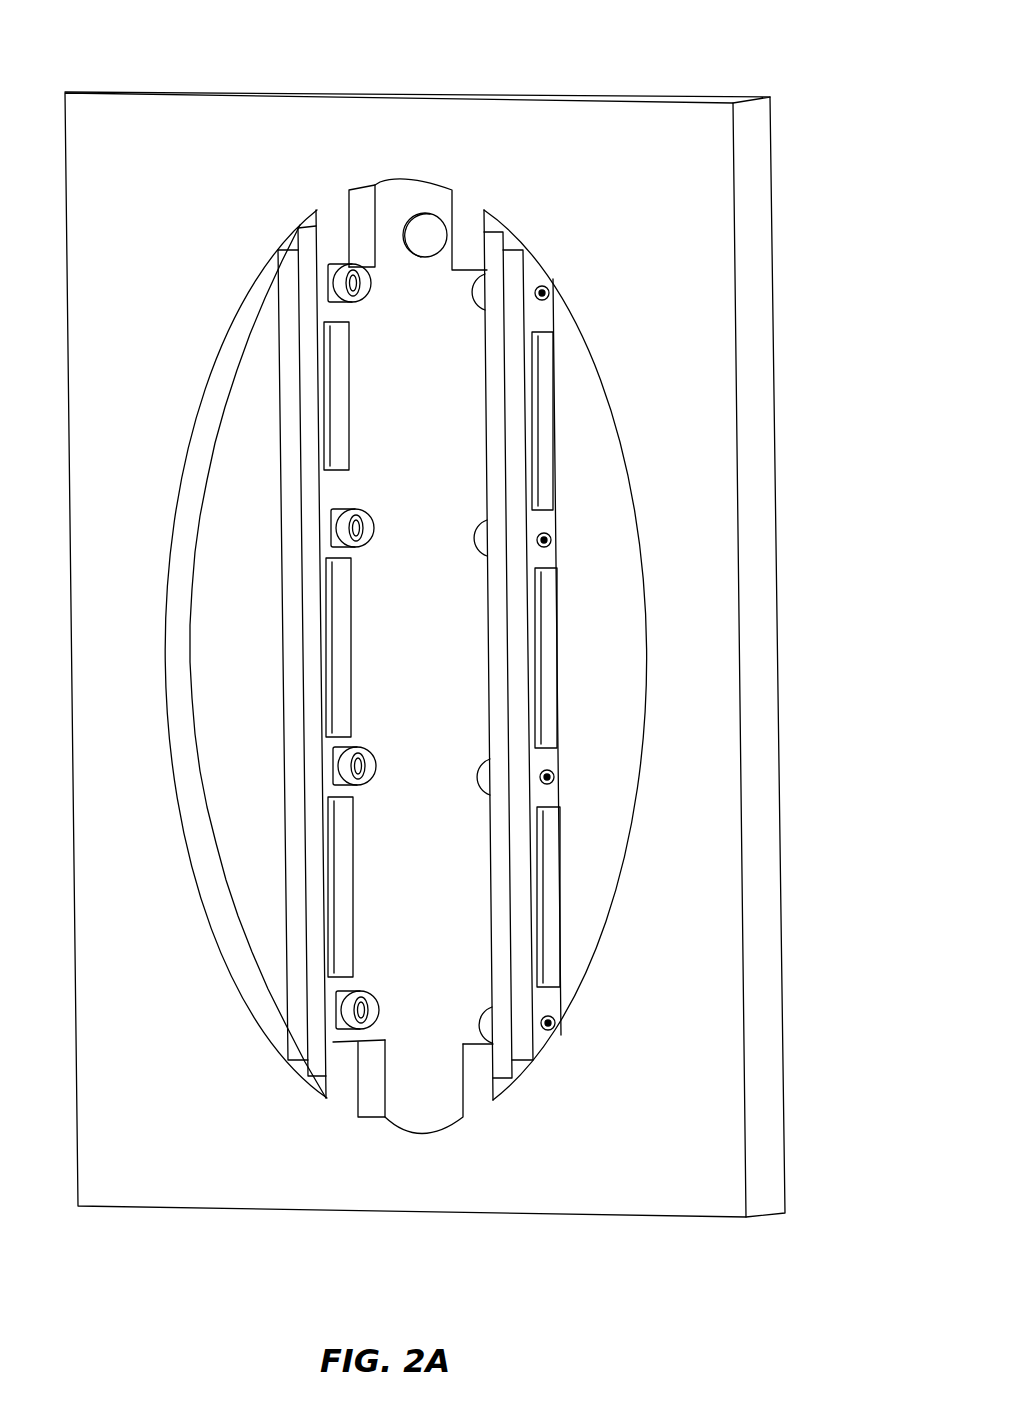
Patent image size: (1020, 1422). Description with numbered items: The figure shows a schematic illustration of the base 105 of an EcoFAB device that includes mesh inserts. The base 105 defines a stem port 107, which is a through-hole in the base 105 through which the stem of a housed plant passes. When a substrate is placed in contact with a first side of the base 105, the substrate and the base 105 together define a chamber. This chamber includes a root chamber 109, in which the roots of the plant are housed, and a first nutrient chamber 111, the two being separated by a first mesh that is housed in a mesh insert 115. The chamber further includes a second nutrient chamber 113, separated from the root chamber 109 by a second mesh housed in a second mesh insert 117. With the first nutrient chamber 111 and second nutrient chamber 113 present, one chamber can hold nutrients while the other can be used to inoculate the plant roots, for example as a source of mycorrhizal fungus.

The base 105 is at (757, 351).
The stem port 107 is at (435, 237).
The root chamber 109 is at (417, 1097).
The first nutrient chamber 111 is at (265, 935).
The second nutrient chamber 113 is at (582, 947).
The mesh insert 115 is at (306, 290).
The mesh insert 117 is at (495, 285).